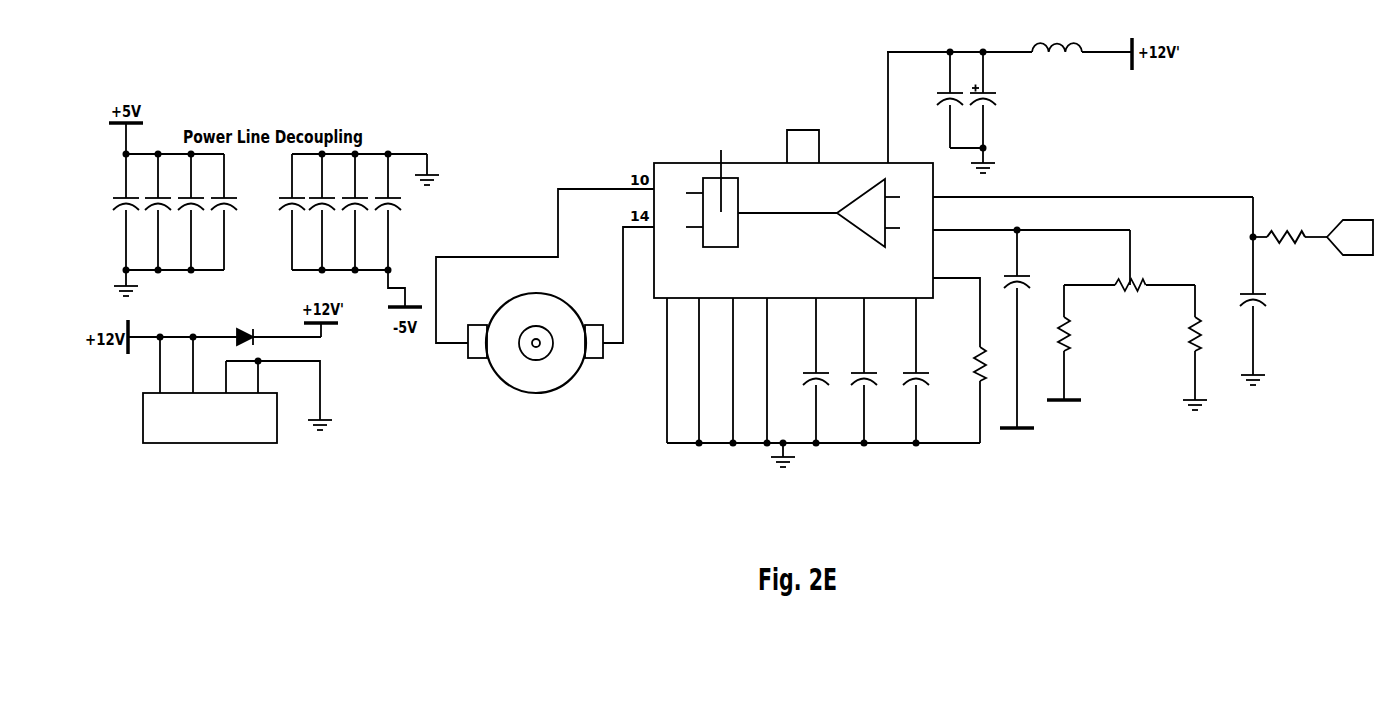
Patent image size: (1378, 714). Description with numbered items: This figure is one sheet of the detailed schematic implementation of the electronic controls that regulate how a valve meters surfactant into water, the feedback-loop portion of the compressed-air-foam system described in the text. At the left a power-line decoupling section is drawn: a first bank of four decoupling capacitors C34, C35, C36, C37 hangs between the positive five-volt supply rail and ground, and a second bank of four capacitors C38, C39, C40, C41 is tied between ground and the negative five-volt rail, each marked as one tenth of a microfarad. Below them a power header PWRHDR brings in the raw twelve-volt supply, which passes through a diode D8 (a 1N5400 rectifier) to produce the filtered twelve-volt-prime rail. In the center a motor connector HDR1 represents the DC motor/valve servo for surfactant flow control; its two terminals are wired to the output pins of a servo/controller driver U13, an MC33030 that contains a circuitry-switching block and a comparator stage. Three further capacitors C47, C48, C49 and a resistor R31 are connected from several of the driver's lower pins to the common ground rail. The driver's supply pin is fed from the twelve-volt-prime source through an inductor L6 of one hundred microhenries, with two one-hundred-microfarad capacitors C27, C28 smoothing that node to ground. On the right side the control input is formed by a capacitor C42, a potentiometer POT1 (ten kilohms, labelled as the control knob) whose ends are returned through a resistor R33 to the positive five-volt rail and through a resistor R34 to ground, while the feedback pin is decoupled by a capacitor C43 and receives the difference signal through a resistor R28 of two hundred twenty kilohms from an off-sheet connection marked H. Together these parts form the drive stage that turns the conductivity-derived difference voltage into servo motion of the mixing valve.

The decoupling capacitor .1uF C34 is at (124, 212).
The decoupling capacitor .1uF C35 is at (156, 212).
The decoupling capacitor .1uF C36 is at (189, 212).
The decoupling capacitor .1uF C37 is at (222, 212).
The decoupling capacitor .1uF C38 is at (290, 212).
The decoupling capacitor .1uF C39 is at (320, 212).
The decoupling capacitor .1uF C40 is at (353, 212).
The decoupling capacitor .1uF C41 is at (386, 212).
The diode 1N5400 D8 is at (241, 315).
The power header PWRHDR is at (237, 390).
The DC motor/valve servo (surfactant flow control) HDR1 is at (545, 330).
The MC33030 servo/controller driver U13 is at (806, 187).
The capacitor .1uF C47 is at (803, 370).
The capacitor .1uF C48 is at (851, 370).
The capacitor .1uF C49 is at (903, 370).
The resistor 15K R31 is at (959, 360).
The capacitor 100uF C27 is at (940, 100).
The capacitor 100uF C28 is at (1004, 112).
The inductor 100uH L6 is at (1082, 46).
The capacitor .1uF C42 is at (1047, 329).
The potentiometer 10K control knob POT1 is at (1129, 311).
The resistor TBD R33 is at (1054, 355).
The resistor TBD R34 is at (1210, 347).
The capacitor .1uF C43 is at (1243, 291).
The resistor 220K R28 is at (1290, 212).
The connector H is at (1350, 237).